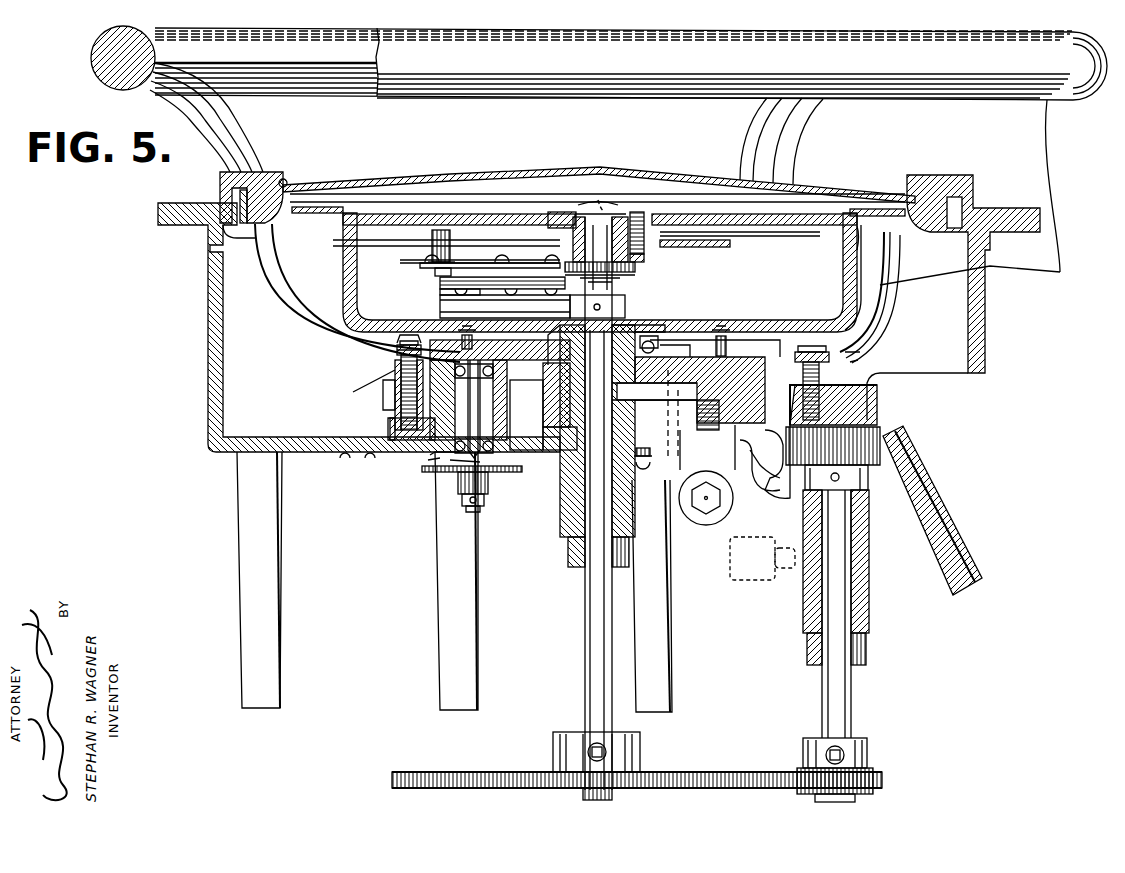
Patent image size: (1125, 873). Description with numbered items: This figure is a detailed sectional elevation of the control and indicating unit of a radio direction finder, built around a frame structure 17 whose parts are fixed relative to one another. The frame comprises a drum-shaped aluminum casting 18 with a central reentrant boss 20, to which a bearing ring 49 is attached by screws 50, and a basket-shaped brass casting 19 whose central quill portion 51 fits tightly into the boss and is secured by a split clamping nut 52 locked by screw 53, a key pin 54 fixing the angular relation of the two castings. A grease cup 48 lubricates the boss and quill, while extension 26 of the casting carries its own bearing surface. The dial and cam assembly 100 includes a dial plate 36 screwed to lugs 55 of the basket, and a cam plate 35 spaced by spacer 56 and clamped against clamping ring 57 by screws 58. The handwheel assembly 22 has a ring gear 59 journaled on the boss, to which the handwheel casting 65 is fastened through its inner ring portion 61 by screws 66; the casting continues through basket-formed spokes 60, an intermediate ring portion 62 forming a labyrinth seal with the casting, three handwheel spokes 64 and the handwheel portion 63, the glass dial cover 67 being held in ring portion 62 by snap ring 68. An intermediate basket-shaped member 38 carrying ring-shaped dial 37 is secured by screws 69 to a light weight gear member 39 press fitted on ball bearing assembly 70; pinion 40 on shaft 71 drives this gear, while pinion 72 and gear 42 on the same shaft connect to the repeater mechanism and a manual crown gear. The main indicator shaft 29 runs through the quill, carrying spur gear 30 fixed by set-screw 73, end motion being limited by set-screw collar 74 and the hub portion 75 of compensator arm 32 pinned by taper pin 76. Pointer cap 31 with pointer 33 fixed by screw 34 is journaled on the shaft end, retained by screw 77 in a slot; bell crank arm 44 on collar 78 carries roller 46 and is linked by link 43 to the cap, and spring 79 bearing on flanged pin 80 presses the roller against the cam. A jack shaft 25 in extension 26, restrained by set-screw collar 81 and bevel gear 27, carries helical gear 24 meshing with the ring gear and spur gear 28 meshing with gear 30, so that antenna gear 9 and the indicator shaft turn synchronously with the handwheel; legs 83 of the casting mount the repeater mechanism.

The antenna gear 9 is at (935, 506).
The frame structure 17 is at (178, 336).
The drum-shaped aluminum casting 18 is at (228, 404).
The basket-shaped brass casting 19 is at (358, 290).
The central reentrant boss 20 is at (772, 460).
The handwheel assembly 22 is at (380, 388).
The helical gear 24 is at (880, 402).
The jack shaft 25 is at (851, 710).
The extension of casting 26 is at (795, 503).
The bevel gear 27 is at (880, 443).
The spur gear 28 is at (874, 778).
The main indicator shaft 29 is at (590, 592).
The spur gear 30 is at (687, 773).
The pointer cap 31 is at (637, 278).
The compensator arm 32 is at (480, 296).
The pointer 33 is at (733, 206).
The screw 34 is at (610, 206).
The cam plate 35 is at (735, 248).
The dial plate 36 is at (826, 228).
The ring-shaped dial 37 is at (876, 210).
The intermediate basket-shaped member 38 is at (895, 266).
The light weight gear member 39 is at (735, 348).
The pinion 40 is at (455, 343).
The gear 42 is at (430, 468).
The link 43 is at (515, 241).
The bell crank arm 44 is at (440, 264).
The roller 46 is at (430, 250).
The grease cup 48 is at (705, 506).
The bearing ring 49 is at (748, 578).
The screws 50 is at (670, 460).
The quill portion 51 is at (565, 393).
The split clamping nut 52 is at (552, 450).
The screw 53 is at (645, 458).
The key pin 54 is at (553, 368).
The lugs 55 is at (412, 228).
The spacer 56 is at (562, 212).
The clamping ring 57 is at (650, 258).
The screws 58 is at (640, 232).
The ring gear 59 is at (415, 423).
The basket-formed set of spokes 60 is at (270, 300).
The inner ring portion 61 is at (372, 382).
The intermediate ring portion 62 is at (220, 176).
The handwheel portion 63 is at (96, 58).
The handwheel spokes 64 is at (790, 131).
The handwheel casting 65 is at (980, 192).
The screws 66 is at (395, 358).
The glass dial cover 67 is at (583, 171).
The snap ring 68 is at (290, 180).
The screws 69 is at (700, 334).
The ball bearing assembly 70 is at (650, 330).
The shaft 71 is at (478, 412).
The pinion 72 is at (460, 478).
The set-screw 73 is at (588, 749).
The set-screw collar 74 is at (568, 553).
The hub portion 75 is at (505, 302).
The taper pin 76 is at (570, 306).
The screw 77 is at (600, 232).
The collar 78 is at (440, 270).
The spring 79 is at (440, 289).
The flanged pin 80 is at (545, 291).
The set-screw collar 81 is at (808, 650).
The legs 83 is at (663, 680).
The dial and cam assembly 100 is at (778, 248).